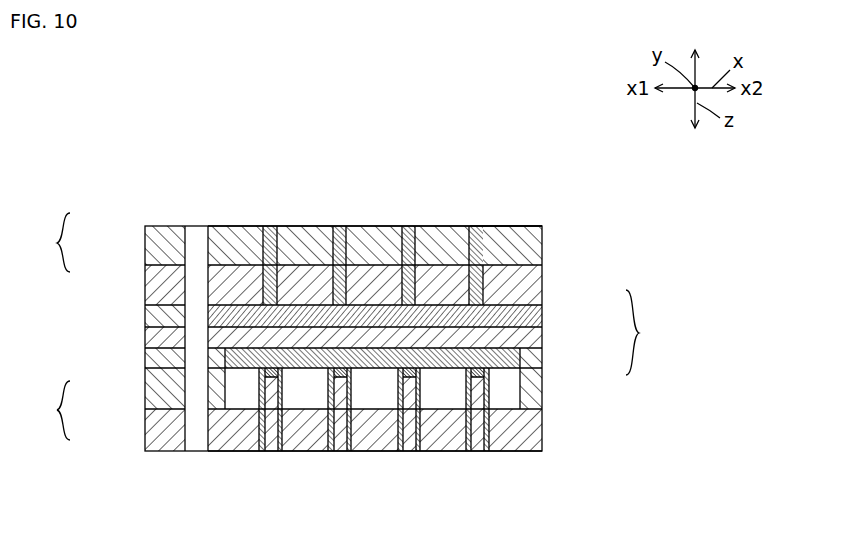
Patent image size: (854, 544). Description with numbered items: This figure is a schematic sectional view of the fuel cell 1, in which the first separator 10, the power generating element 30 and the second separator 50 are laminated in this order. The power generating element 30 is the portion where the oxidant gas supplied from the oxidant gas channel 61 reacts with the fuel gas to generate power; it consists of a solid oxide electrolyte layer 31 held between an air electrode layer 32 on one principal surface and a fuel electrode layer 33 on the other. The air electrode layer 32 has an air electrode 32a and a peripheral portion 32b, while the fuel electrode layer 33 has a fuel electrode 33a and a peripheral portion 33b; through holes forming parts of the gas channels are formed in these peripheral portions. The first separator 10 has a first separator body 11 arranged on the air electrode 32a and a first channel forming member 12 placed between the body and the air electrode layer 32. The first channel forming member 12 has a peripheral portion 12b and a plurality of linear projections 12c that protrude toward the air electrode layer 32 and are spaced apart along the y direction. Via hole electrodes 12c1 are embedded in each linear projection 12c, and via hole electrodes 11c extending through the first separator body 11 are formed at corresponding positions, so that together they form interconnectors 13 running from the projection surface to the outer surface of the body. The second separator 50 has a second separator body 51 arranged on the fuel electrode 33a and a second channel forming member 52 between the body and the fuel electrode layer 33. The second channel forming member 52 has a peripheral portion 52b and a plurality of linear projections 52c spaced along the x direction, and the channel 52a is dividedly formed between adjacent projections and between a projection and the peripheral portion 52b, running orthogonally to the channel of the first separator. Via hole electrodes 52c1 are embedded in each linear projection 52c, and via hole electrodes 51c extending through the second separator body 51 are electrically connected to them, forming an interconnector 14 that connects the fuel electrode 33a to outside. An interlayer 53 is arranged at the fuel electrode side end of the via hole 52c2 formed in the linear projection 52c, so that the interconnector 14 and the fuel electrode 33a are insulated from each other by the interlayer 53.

The fuel cell 1 is at (571, 170).
The first separator 10 is at (49, 242).
The first separator body 11 is at (144, 251).
The via hole electrode 11c is at (478, 226).
The first channel forming member 12 is at (144, 281).
The peripheral portion 12b is at (144, 296).
The linear projection 12c is at (547, 270).
The via hole electrode 12c1 is at (483, 294).
The interconnector 13 is at (337, 226).
The interconnector 14 is at (342, 453).
The power generating element 30 is at (646, 332).
The solid oxide electrolyte layer 31 is at (543, 337).
The air electrode layer 32 is at (547, 316).
The air electrode 32a is at (449, 303).
The peripheral portion 32b is at (166, 312).
The fuel electrode layer 33 is at (547, 352).
The fuel electrode 33a is at (373, 368).
The peripheral portion 33b is at (165, 352).
The second separator 50 is at (48, 410).
The second separator body 51 is at (145, 432).
The via hole electrode 51c is at (489, 412).
The second channel forming member 52 is at (145, 397).
The channel 52a is at (262, 390).
The peripheral portion 52b is at (543, 376).
The linear projection 52c is at (544, 442).
The via hole electrode 52c1 is at (470, 380).
The via hole 52c2 is at (267, 410).
The interlayer 53 is at (411, 400).
The oxidant gas channel 61 is at (203, 252).